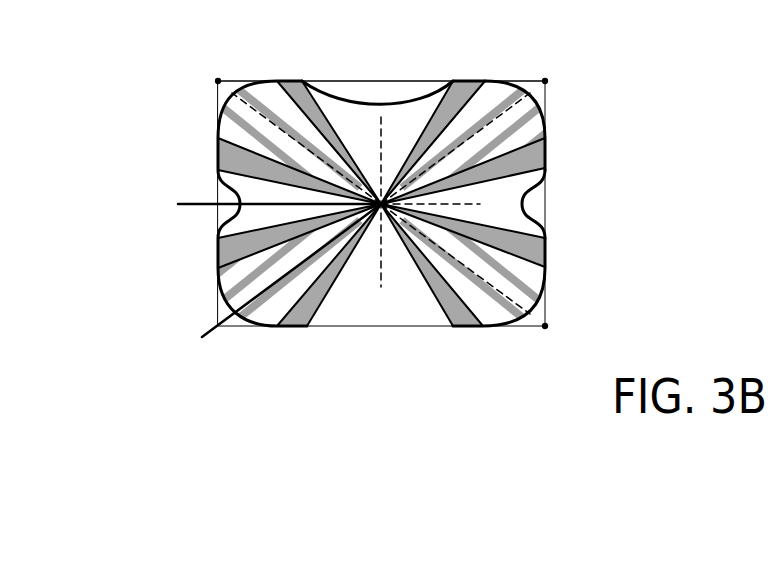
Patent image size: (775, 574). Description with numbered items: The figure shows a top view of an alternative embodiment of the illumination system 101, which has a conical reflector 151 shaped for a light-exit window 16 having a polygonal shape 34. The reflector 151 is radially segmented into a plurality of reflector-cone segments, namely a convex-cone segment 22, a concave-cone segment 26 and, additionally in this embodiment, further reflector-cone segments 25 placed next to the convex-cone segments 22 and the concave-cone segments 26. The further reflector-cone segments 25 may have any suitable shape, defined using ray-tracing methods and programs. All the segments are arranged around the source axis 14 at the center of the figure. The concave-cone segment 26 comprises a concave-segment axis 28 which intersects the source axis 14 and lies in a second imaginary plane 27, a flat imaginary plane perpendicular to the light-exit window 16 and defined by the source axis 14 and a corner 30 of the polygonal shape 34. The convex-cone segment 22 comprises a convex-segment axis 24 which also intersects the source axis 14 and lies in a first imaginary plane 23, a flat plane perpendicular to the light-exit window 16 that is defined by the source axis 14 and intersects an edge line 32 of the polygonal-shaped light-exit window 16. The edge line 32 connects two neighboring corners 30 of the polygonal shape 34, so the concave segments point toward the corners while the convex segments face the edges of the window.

The illumination system 101 is at (549, 38).
The source axis 14 is at (383, 188).
The light-exit window 16 is at (401, 88).
The convex-cone segment 22 is at (508, 219).
The first imaginary plane 23 is at (195, 208).
The convex-segment axis 24 is at (473, 195).
The further reflector-cone segments 25 is at (466, 88).
The concave-cone segment 26 is at (507, 88).
The second imaginary plane 27 is at (203, 340).
The concave-segment axis 28 is at (470, 122).
The corner 30 is at (218, 80).
The edge line 32 is at (322, 80).
The polygonal shape 34 is at (201, 105).
The conical reflector 151 is at (545, 154).